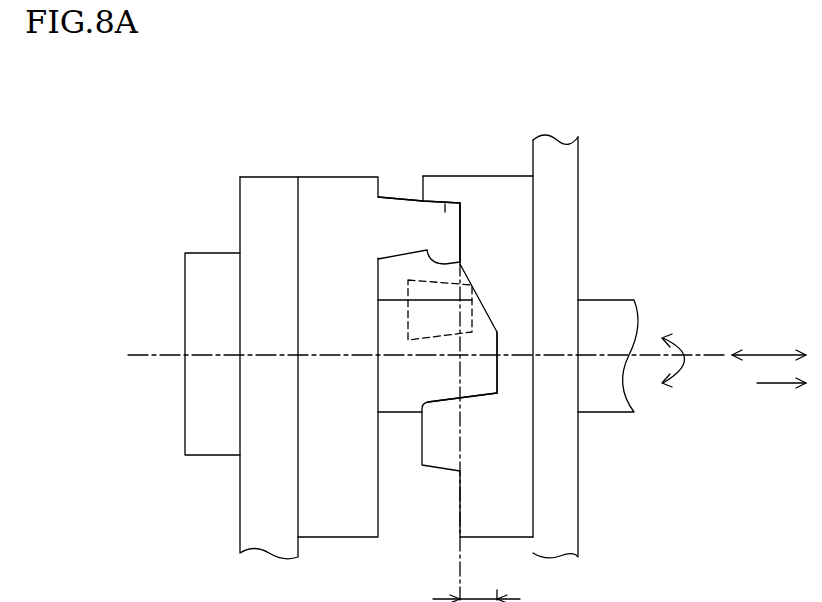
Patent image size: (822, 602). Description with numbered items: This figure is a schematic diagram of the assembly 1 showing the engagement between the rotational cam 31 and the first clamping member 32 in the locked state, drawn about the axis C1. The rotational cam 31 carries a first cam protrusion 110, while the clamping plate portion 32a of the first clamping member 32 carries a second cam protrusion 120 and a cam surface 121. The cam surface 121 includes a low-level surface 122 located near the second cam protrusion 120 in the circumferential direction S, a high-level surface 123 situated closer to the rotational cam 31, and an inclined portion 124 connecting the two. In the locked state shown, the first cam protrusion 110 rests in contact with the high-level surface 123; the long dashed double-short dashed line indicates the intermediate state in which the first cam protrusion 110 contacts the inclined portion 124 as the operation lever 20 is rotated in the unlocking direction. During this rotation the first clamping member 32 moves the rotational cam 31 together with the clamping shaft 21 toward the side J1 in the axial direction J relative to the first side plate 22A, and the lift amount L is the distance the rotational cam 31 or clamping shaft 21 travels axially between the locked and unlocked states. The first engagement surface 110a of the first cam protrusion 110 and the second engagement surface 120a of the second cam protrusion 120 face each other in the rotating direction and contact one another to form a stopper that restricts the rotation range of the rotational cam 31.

The sealing device 1 is at (594, 137).
The operation lever 20 is at (239, 500).
The clamping shaft 21 is at (607, 299).
The first side plate 22A is at (565, 160).
The rotational cam 31 is at (338, 176).
The first clamping member 32 is at (507, 174).
The clamping plate portion 32a is at (484, 175).
The first cam protrusion 110 is at (407, 238).
The first engagement surface 110a is at (460, 262).
The second cam protrusion 120 is at (432, 460).
The second engagement surface 120a is at (442, 404).
The cam surface 121 is at (456, 236).
The low-level surface 122 is at (497, 373).
The high-level surface 123 is at (457, 218).
The inclined portion 124 is at (485, 312).
The lift amount L is at (476, 592).
The circumferential direction S is at (672, 332).
The axis C1 is at (704, 358).
The axial direction J is at (772, 352).
The side J1 is at (772, 388).